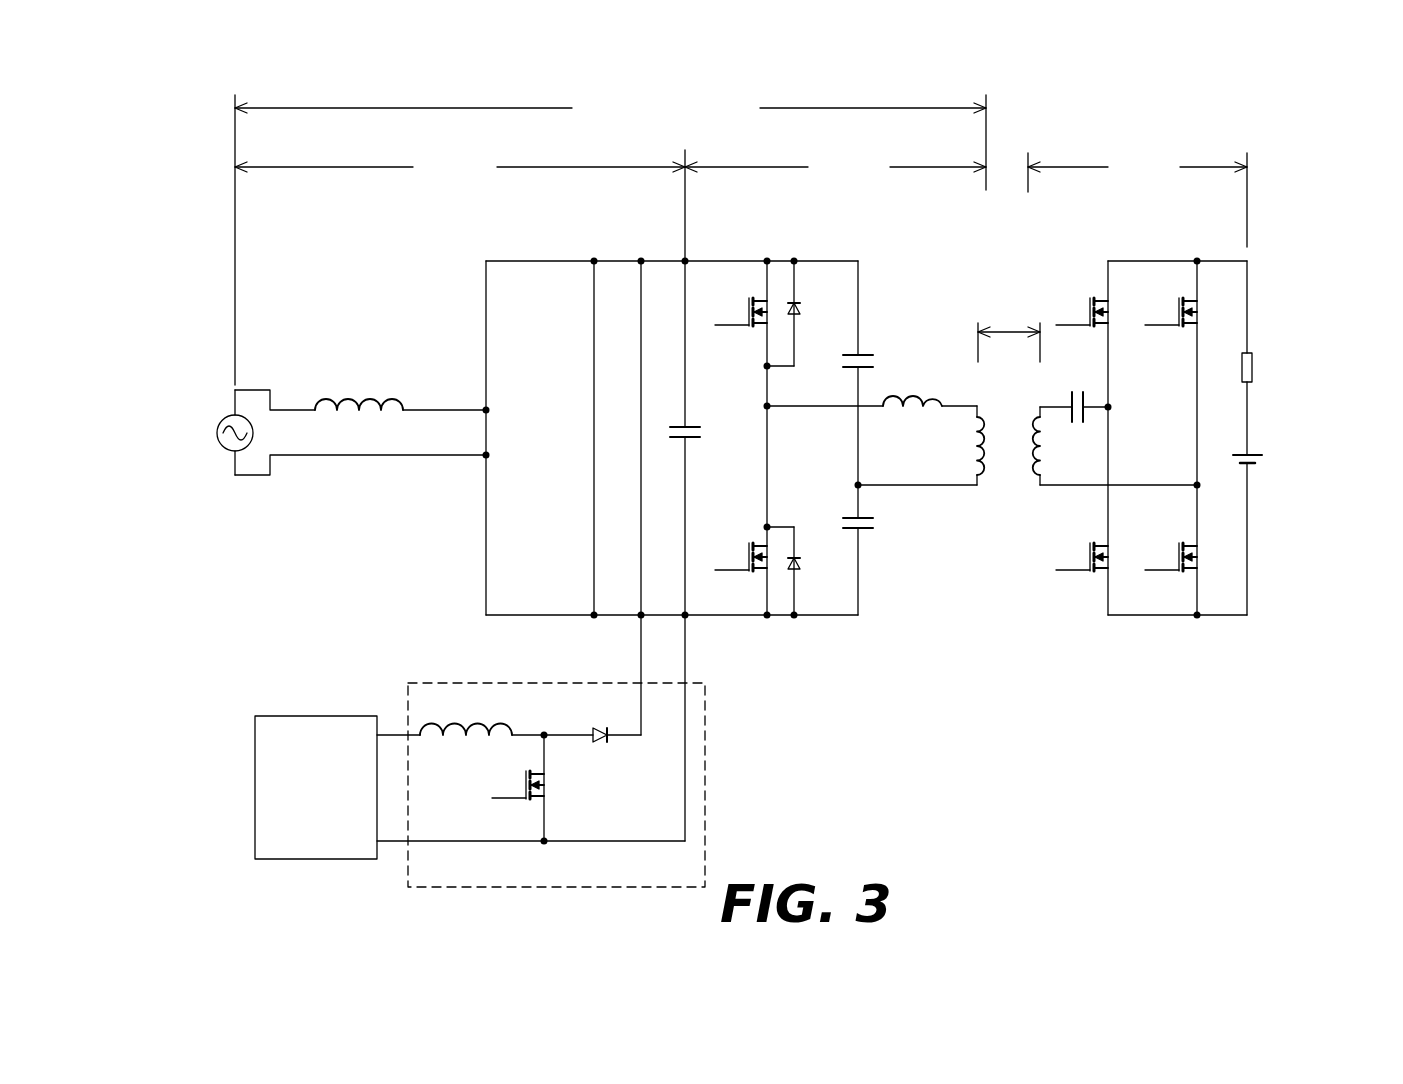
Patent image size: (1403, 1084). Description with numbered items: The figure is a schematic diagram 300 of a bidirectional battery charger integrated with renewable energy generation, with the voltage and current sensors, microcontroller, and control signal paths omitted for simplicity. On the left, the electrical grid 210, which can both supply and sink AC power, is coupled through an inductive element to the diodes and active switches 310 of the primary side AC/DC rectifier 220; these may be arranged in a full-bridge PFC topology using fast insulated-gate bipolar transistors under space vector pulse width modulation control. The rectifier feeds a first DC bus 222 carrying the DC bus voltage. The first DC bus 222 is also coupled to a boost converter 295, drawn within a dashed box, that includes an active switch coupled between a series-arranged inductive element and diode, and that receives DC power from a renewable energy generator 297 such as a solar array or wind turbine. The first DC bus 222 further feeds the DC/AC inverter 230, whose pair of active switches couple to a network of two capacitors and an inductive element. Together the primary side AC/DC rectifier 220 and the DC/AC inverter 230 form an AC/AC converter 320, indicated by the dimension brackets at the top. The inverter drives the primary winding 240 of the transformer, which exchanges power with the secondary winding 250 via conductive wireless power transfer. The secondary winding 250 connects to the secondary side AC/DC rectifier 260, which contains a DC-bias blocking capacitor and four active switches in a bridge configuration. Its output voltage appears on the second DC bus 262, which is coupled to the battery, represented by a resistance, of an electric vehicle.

The electrical grid 210 is at (224, 449).
The primary side AC/DC rectifier 220 is at (405, 192).
The first DC bus 222 is at (668, 298).
The DC/AC inverter 230 is at (830, 203).
The primary winding 240 is at (988, 472).
The secondary winding 250 is at (1037, 416).
The secondary side AC/DC rectifier 260 is at (1130, 203).
The second DC bus 262 is at (1272, 265).
The boost converter 295 is at (408, 683).
The renewable energy generator 297 is at (255, 716).
The schematic diagram 300 is at (1286, 152).
The diodes and active switches 310 is at (482, 288).
The AC/AC converter 320 is at (692, 120).